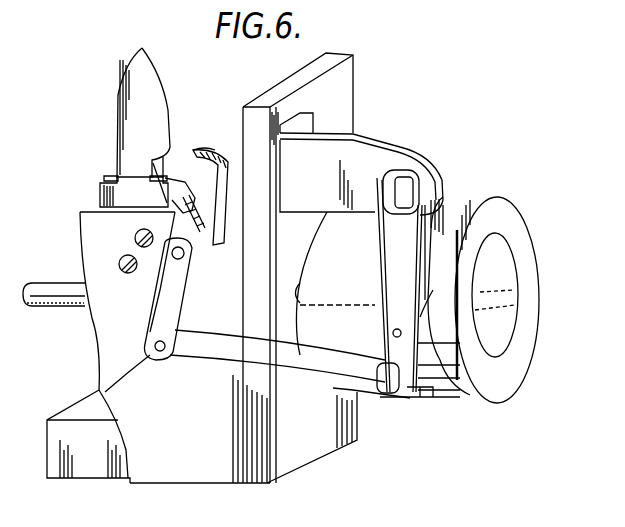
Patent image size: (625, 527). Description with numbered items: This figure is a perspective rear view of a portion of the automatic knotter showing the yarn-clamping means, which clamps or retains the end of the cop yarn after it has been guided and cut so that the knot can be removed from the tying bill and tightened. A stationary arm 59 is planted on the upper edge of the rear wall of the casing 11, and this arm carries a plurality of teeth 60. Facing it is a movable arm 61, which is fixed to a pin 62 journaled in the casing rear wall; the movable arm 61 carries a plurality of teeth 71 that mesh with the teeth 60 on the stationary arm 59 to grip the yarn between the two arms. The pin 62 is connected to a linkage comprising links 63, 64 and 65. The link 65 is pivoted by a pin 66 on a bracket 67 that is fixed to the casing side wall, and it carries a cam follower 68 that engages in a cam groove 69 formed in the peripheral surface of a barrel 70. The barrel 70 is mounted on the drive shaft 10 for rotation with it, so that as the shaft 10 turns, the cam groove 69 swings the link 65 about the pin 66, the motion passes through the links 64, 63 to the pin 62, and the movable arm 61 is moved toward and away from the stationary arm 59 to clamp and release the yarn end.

The drive shaft 10 is at (48, 283).
The casing 11 is at (210, 481).
The stationary arm 59 is at (130, 107).
The teeth 60 is at (147, 172).
The movable arm 61 is at (182, 178).
The pin 62 is at (181, 256).
The link 63 is at (153, 323).
The link 64 is at (198, 340).
The link 65 is at (383, 270).
The pin 66 is at (392, 184).
The bracket 67 is at (387, 160).
The cam follower 68 is at (437, 290).
The cam groove 69 is at (453, 210).
The barrel 70 is at (488, 383).
The teeth 71 is at (203, 147).